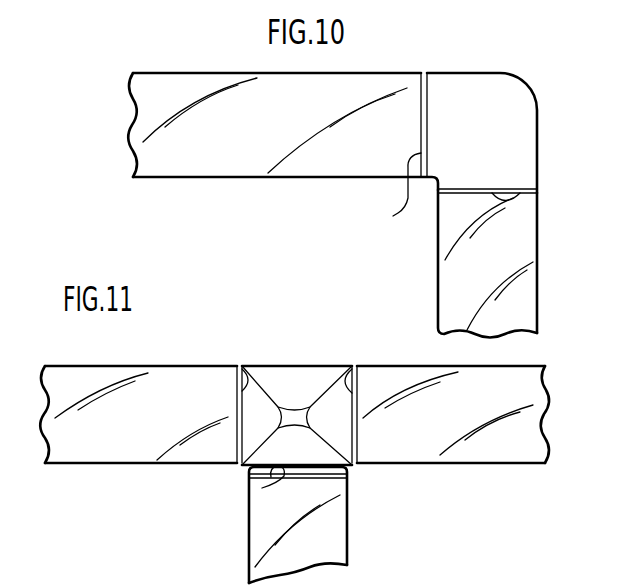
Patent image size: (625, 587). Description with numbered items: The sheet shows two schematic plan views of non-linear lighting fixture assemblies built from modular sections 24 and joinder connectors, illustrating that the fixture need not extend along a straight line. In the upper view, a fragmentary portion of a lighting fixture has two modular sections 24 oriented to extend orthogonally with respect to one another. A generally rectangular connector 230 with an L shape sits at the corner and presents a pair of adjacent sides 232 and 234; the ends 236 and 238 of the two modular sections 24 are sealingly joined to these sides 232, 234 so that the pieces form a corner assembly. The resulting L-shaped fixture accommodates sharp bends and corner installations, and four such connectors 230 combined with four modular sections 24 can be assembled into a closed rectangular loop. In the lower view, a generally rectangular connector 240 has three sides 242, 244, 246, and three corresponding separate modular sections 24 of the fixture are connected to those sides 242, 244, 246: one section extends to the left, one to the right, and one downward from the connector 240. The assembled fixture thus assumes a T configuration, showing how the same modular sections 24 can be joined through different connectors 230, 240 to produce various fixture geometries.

In FIG. 10, the modular section 24 is at (198, 162).
In FIG. 11, the modular section 24 is at (125, 446).
In FIG. 10, the connector 230 is at (477, 100).
In FIG. 10, the side 232 is at (427, 98).
In FIG. 10, the side 234 is at (505, 192).
In FIG. 10, the end 236 is at (389, 191).
In FIG. 10, the end 238 is at (522, 200).
In FIG. 11, the connector 240 is at (295, 377).
In FIG. 11, the side 242 is at (247, 364).
In FIG. 11, the side 244 is at (262, 488).
In FIG. 11, the side 246 is at (342, 372).